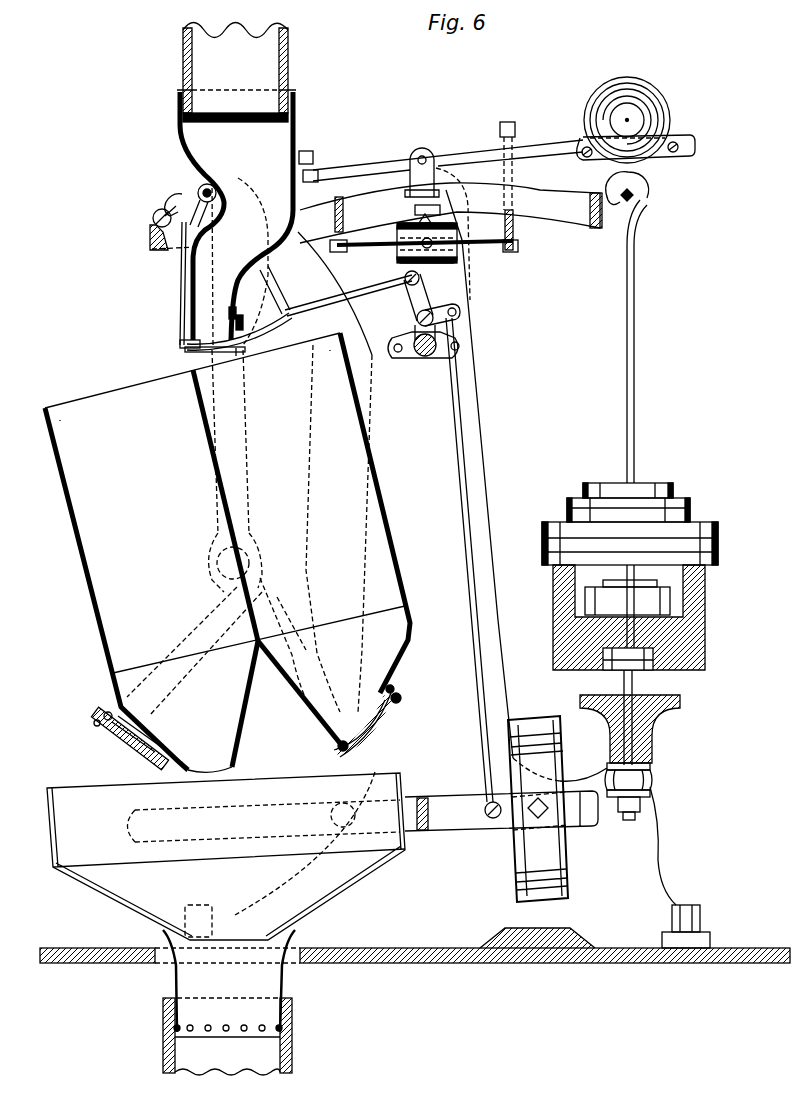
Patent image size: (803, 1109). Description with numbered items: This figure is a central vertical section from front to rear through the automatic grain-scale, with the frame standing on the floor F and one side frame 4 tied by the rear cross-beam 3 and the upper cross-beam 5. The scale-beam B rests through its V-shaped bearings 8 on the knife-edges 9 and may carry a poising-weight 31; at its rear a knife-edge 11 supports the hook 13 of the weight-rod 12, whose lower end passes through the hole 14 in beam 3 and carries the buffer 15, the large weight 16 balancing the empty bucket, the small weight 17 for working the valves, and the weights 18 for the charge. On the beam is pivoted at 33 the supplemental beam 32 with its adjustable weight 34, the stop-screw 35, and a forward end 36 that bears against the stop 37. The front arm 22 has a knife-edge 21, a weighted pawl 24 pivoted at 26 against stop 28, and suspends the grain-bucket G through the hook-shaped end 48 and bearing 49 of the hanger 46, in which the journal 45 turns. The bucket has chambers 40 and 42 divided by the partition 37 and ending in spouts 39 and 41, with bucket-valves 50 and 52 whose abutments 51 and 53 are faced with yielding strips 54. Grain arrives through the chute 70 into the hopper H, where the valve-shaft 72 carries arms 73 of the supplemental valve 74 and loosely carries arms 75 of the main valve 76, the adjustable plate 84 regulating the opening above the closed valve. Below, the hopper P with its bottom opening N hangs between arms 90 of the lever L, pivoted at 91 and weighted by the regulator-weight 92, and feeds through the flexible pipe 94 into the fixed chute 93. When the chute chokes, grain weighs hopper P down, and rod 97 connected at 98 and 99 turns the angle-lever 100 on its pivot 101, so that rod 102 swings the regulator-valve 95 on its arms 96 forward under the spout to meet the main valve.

The trough or chute 70 is at (288, 44).
The discharging hopper or spout H is at (215, 145).
The inverted-V-shaped bearing 49 is at (228, 190).
The hook-shaped upper end of hanger 48 is at (250, 202).
The valve-shaft 72 is at (198, 188).
The weighted pawl 24 is at (166, 205).
The pawl pivot 26 is at (153, 220).
The stop 28 is at (150, 250).
The knife-edge 21 is at (212, 222).
The arms carrying main cut-off valve 75 is at (181, 299).
The arms of supplemental cut-off valve 73 is at (182, 348).
The main cut-off valve 76 is at (205, 352).
The supplemental cut-off valve 74 is at (236, 356).
The vertically-adjustable plate 84 is at (243, 320).
The arms of regulator-valve 96 is at (272, 284).
The regulator-valve 95 is at (240, 348).
The scale-beam arm 22 is at (300, 223).
The stop / partition 37 is at (306, 152).
The forward end of supplemental beam 36 is at (310, 176).
The supplemental beam or lever 32 is at (465, 152).
The pivot point of supplemental beam 33 is at (419, 155).
The stop-screw 35 is at (532, 130).
The scale-beam B is at (538, 215).
The poising-weight 31 is at (443, 262).
The V-shaped bearing 8 is at (430, 210).
The knife-edge 9 is at (418, 216).
The supplemental weight 34 is at (658, 113).
The hook 13 is at (614, 188).
The knife-edge 11 is at (633, 192).
The weight-rod 12 is at (631, 346).
The rod 102 is at (357, 304).
The angle-lever 100 is at (412, 295).
The pivot of angle-lever 101 is at (432, 311).
The connection of rod 97 to angle-lever 99 is at (458, 313).
The cross-beam 5 is at (420, 356).
The side frame 4 is at (474, 458).
The rod 97 is at (483, 532).
The grain-bucket G is at (227, 551).
The bucket chamber 40 is at (109, 467).
The bucket chamber 42 is at (313, 414).
The hanger 46 is at (232, 432).
The journal or trunnion 45 is at (250, 561).
The spout 41 is at (332, 722).
The spout 39 is at (203, 750).
The bucket-valve or bottom 52 is at (372, 735).
The ledge or abutment 53 is at (400, 699).
The yielding strip 54 is at (390, 690).
The bucket-valve or bottom 50 is at (135, 745).
The ledge or abutment 51 is at (95, 723).
The weights 18 is at (688, 508).
The large weight 16 is at (700, 640).
The small weight 17 is at (662, 606).
The hole 14 is at (634, 699).
The cross-beam 3 is at (650, 735).
The buffer 15 is at (652, 781).
The regulator-weight 92 is at (555, 850).
The lever L is at (440, 822).
The connection of rod 97 to lever L 98 is at (493, 820).
The vertically-movable hopper P is at (122, 885).
The arms of lever L 90 is at (250, 828).
The pivot of lever L 91 is at (348, 818).
The opening N is at (226, 940).
The floor F is at (640, 963).
The pipe or connection 94 is at (172, 980).
The fixed chute 93 is at (285, 1040).